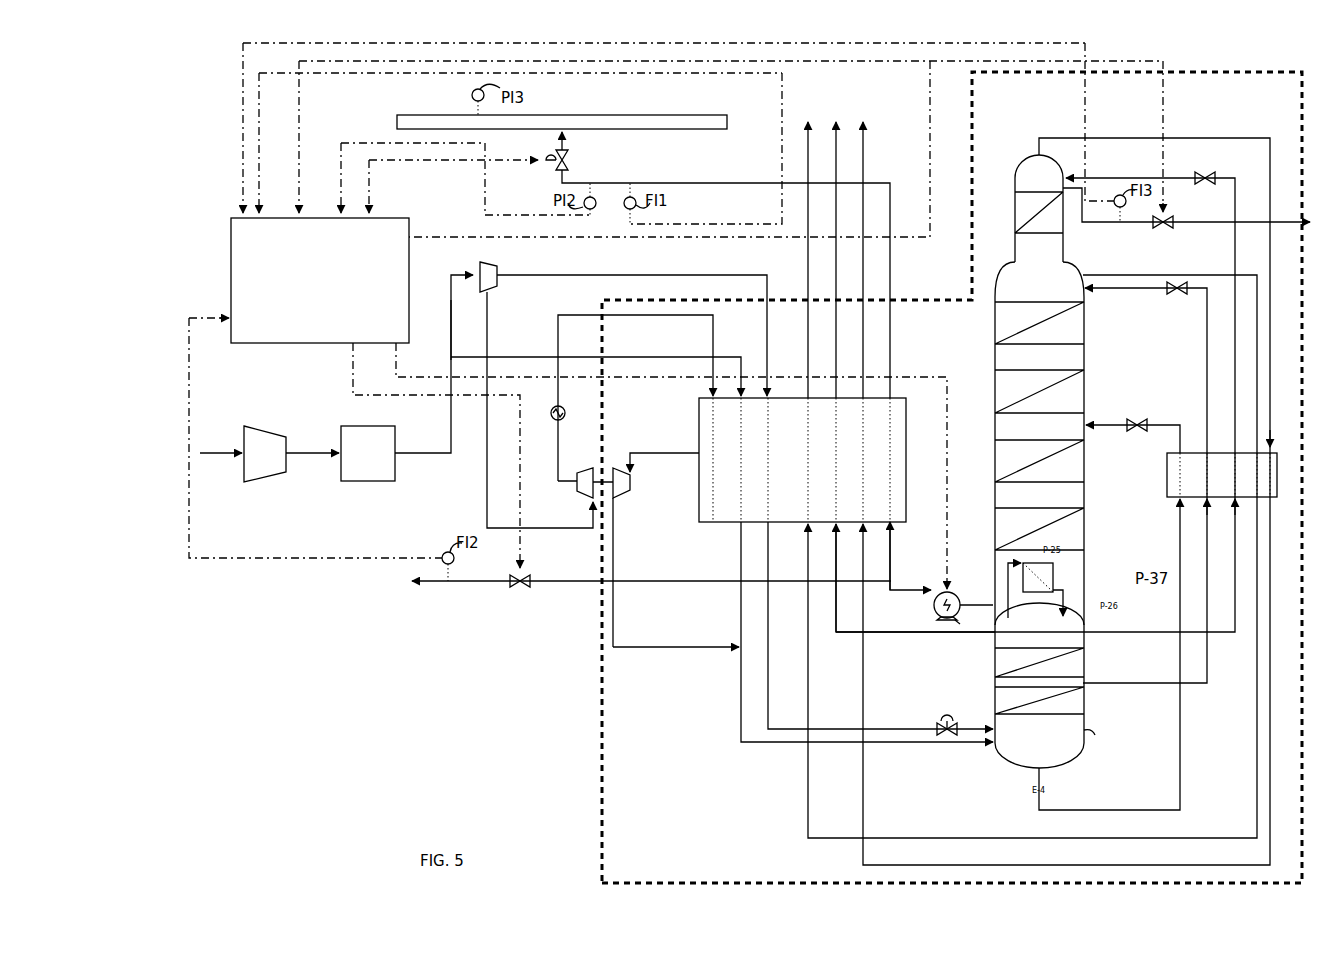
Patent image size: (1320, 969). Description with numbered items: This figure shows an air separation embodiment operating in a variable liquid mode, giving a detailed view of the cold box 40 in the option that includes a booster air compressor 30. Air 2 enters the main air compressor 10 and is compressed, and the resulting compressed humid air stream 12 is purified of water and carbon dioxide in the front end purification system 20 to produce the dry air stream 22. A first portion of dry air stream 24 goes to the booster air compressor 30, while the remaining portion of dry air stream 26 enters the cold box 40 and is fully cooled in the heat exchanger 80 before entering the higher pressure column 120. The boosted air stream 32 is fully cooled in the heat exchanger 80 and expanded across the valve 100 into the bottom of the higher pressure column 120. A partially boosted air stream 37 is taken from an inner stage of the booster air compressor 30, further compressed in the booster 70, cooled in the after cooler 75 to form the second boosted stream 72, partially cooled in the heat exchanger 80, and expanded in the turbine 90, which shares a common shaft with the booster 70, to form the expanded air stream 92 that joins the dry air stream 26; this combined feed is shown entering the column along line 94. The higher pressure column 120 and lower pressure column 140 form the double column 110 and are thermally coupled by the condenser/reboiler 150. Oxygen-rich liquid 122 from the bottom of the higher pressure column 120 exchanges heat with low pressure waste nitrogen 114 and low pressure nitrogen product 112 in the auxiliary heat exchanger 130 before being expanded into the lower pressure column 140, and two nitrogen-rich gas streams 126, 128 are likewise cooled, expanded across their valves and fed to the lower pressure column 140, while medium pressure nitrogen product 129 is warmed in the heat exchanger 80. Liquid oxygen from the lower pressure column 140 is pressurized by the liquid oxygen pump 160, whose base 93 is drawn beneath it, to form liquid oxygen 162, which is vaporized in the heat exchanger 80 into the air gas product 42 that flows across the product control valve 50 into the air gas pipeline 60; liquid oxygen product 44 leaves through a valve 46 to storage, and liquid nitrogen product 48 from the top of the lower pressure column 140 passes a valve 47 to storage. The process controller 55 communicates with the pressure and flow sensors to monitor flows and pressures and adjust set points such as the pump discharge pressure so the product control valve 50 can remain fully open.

The air 2 is at (228, 453).
The main air compressor 10 is at (275, 461).
The compressed humid air stream 12 is at (331, 452).
The front end purification system 20 is at (376, 461).
The dry air stream 22 is at (441, 452).
The first portion of dry air stream 24 is at (450, 333).
The remaining portion of dry air stream 26 is at (655, 357).
The booster air compressor 30 is at (497, 288).
The boosted air stream 32 is at (500, 275).
The partially boosted air stream 37 is at (487, 426).
The cold box 40 is at (952, 147).
The air gas product 42 is at (693, 185).
The liquid oxygen product 44 is at (542, 581).
The vent valve 46 is at (524, 575).
The product valve 47 is at (1166, 212).
The liquid nitrogen product 48 is at (1190, 222).
The product control valve 50 is at (566, 163).
The process controller 55 is at (323, 290).
The air gas pipeline 60 is at (715, 115).
The booster 70 is at (585, 472).
The second boosted stream 72 is at (713, 345).
The after cooler 75 is at (553, 409).
The heat exchanger 80 is at (699, 420).
The turbine 90 is at (624, 498).
The expanded air stream 92 is at (670, 647).
The pump base 93 is at (965, 622).
The column feed line 94 is at (765, 744).
The valve 100 is at (947, 714).
The double column 110 is at (1110, 397).
The low pressure nitrogen product 112 is at (1150, 138).
The low pressure waste nitrogen 114 is at (1150, 276).
The higher pressure column 120 is at (1103, 740).
The oxygen-rich liquid 122 is at (1080, 810).
The nitrogen-rich gas stream 126 is at (1152, 178).
The nitrogen-rich gas stream 128 is at (1150, 290).
The medium pressure nitrogen product 129 is at (932, 634).
The auxiliary heat exchanger 130 is at (1167, 466).
The lower pressure column 140 is at (1105, 354).
The condenser/reboiler 150 is at (1053, 575).
The liquid oxygen pump 160 is at (957, 600).
The liquid oxygen 162 is at (891, 575).